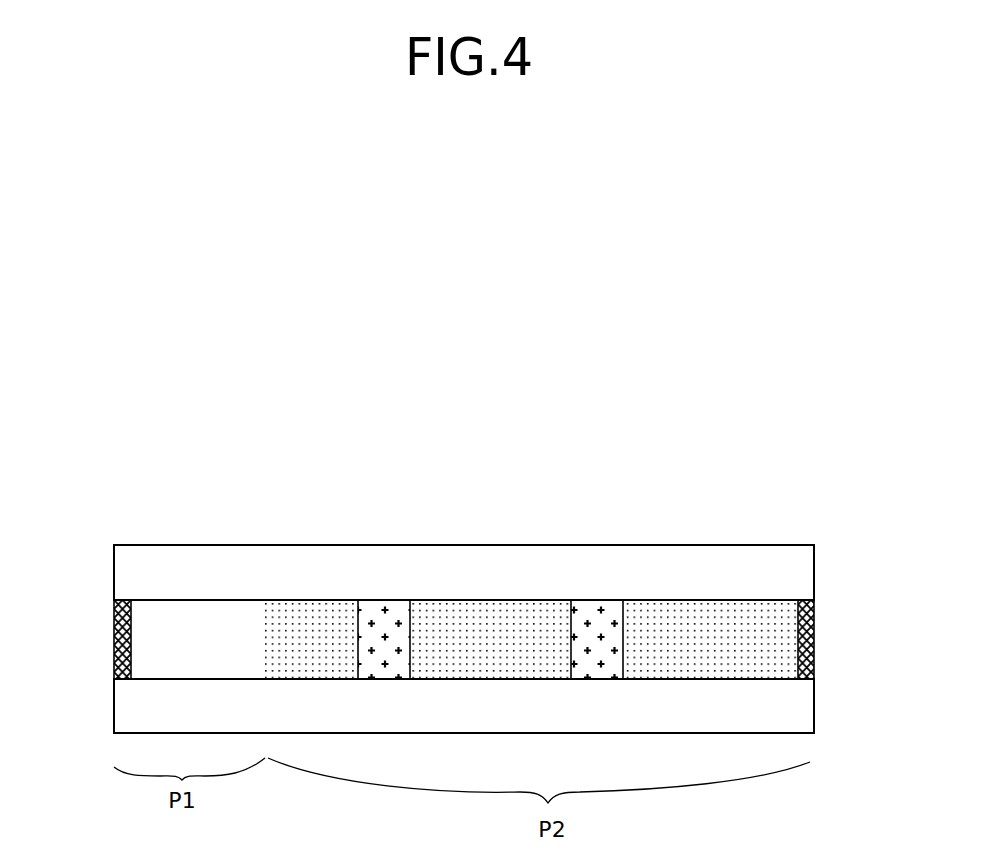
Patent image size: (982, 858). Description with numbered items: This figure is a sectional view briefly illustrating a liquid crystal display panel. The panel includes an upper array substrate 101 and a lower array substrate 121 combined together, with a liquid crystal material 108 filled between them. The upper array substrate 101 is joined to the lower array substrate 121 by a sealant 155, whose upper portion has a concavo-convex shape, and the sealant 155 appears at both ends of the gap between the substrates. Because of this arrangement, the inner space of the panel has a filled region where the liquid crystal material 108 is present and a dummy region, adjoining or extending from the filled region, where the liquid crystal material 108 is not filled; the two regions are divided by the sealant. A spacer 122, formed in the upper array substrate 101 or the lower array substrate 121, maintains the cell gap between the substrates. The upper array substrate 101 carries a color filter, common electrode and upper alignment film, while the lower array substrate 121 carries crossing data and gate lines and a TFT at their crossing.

The upper array substrate 101 is at (800, 575).
The lower array substrate 121 is at (800, 708).
The spacer 122 is at (392, 613).
The liquid crystal material 108 is at (485, 648).
The sealant 155 is at (114, 648).